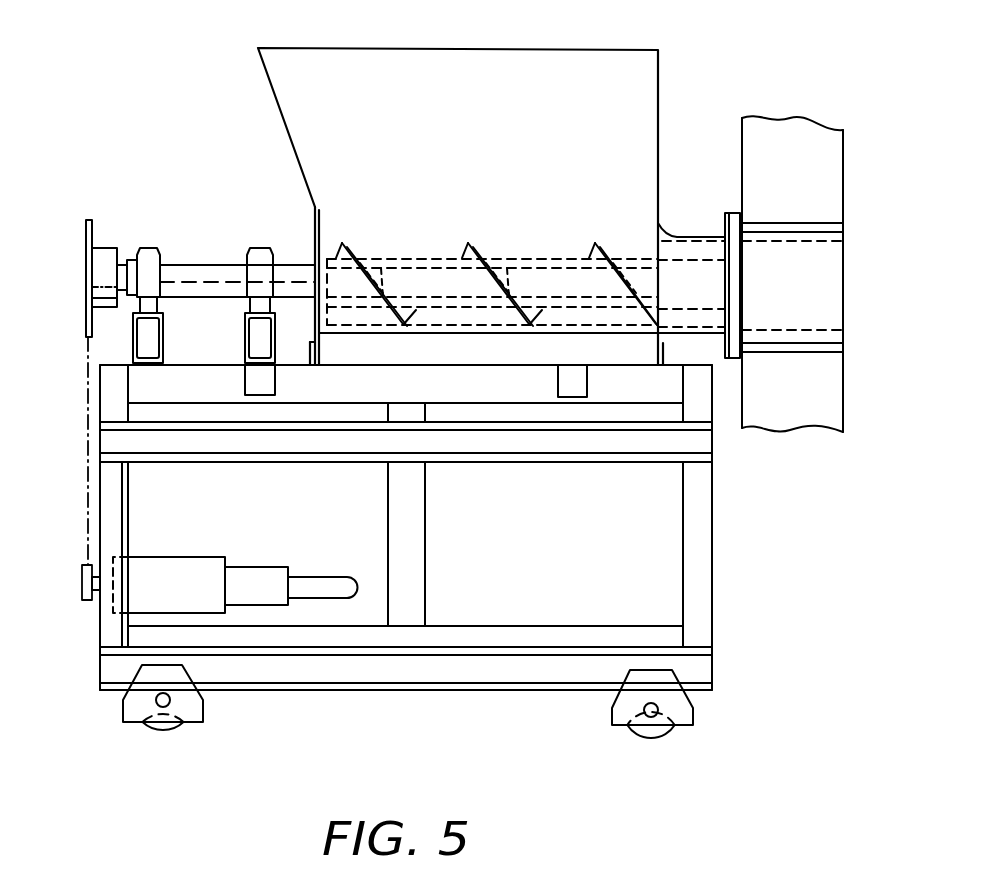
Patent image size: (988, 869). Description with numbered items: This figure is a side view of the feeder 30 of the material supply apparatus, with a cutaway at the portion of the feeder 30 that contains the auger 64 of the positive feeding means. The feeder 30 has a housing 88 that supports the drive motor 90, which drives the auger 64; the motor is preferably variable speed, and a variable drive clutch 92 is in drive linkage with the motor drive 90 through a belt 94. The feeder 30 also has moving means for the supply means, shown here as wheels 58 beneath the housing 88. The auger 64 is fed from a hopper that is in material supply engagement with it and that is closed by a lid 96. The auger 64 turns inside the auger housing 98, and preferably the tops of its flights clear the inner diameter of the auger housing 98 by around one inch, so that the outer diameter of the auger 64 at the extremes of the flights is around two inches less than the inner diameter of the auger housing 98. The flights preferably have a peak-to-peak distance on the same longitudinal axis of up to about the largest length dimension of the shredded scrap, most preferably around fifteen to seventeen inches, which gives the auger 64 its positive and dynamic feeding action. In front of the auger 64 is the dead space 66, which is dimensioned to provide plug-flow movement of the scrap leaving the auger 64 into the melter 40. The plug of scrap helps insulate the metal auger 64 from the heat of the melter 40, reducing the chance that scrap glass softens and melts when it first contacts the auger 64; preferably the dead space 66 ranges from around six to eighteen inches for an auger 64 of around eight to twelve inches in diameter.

The feeder 30 is at (100, 533).
The melter 40 is at (778, 157).
The wheel 58 is at (173, 725).
The auger 64 is at (690, 273).
The dead space 66 is at (798, 257).
The housing 88 is at (712, 558).
The drive motor 90 is at (187, 563).
The variable drive clutch 92 is at (113, 262).
The belt 94 is at (88, 382).
The lid 96 is at (517, 50).
The auger housing 98 is at (690, 335).